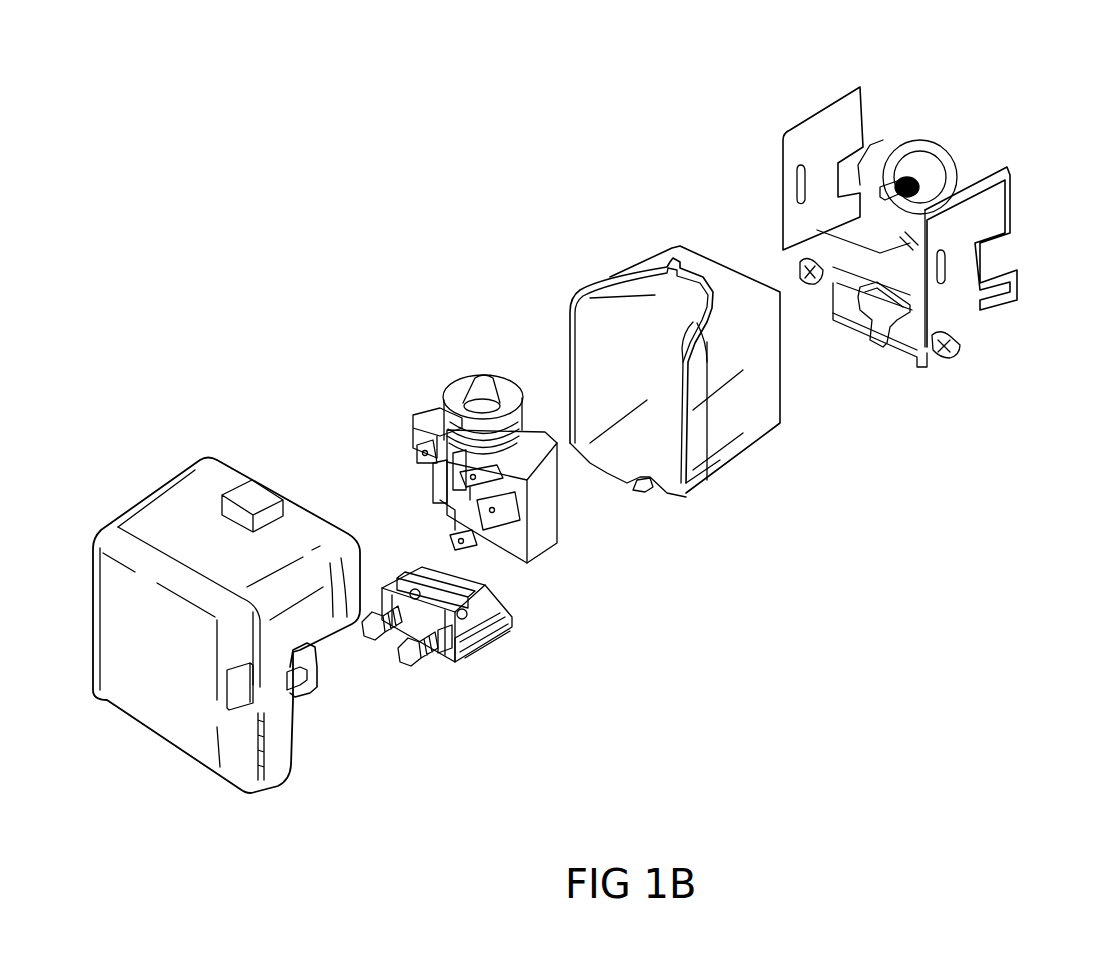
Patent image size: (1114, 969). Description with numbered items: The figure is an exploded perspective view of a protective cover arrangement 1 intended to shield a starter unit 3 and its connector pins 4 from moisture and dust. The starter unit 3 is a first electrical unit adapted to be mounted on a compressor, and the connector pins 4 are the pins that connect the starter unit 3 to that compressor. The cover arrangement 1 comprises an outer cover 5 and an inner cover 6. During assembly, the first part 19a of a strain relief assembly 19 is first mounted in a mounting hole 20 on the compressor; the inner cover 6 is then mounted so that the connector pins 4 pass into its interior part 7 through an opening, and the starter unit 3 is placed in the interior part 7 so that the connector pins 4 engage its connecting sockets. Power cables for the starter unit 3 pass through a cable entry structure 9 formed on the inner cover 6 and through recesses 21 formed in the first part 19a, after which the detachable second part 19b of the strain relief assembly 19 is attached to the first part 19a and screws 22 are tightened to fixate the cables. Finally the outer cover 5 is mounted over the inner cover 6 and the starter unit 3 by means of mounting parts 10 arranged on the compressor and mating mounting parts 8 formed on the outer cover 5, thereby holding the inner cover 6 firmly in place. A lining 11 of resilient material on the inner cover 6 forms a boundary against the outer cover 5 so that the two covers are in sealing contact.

The cover arrangement 1 is at (362, 82).
The starter unit 3 is at (542, 533).
The connector pins 4 is at (890, 180).
The outer cover 5 is at (190, 460).
The inner cover 6 is at (767, 413).
The interior part 7 is at (653, 307).
The mating mounting parts 8 is at (307, 657).
The cable entry structure 9 is at (653, 480).
The mounting parts 10 is at (765, 153).
The lining 11 is at (587, 285).
The strain relief assembly 19 is at (523, 627).
The first part 19a is at (473, 607).
The second part 19b is at (450, 643).
The mounting hole 20 is at (883, 310).
The recesses 21 is at (470, 603).
The screws 22 is at (415, 655).